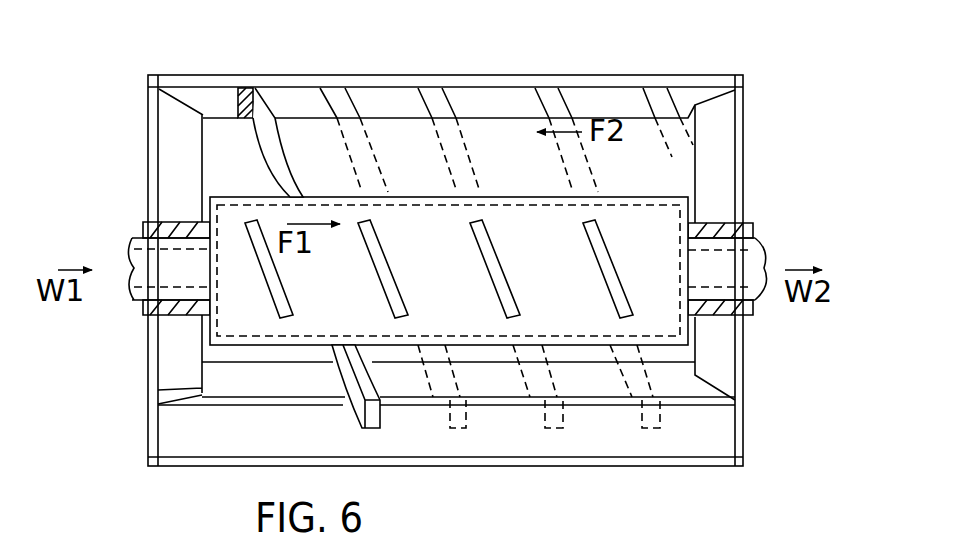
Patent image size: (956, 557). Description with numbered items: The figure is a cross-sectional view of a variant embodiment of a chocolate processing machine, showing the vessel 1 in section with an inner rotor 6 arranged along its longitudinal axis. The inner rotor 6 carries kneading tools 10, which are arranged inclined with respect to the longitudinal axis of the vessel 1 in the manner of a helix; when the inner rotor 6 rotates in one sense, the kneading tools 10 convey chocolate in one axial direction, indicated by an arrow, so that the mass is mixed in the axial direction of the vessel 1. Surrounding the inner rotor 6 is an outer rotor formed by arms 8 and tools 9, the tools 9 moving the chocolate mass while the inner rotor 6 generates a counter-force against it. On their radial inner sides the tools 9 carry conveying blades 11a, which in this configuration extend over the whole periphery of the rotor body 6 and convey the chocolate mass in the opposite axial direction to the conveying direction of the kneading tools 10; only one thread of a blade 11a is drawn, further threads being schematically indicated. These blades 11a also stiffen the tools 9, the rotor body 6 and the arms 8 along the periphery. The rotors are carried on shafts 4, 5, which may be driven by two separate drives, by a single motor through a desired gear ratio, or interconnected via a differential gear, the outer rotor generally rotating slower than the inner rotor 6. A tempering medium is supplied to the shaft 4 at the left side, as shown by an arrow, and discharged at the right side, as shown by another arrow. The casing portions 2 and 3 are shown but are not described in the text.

The vessel 1 is at (516, 74).
The housing 2 is at (500, 447).
The cylindrical shell 3 is at (437, 85).
The shaft 4 is at (147, 265).
The shaft 5 is at (173, 217).
The inner rotor 6 is at (668, 223).
The arms 8 is at (175, 142).
The tools 9 is at (614, 100).
The kneading tools 10 is at (277, 270).
The blades 11a is at (265, 112).